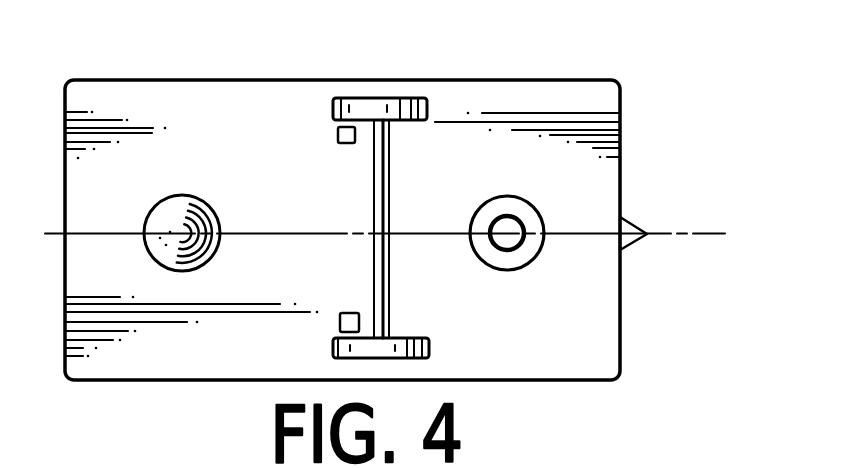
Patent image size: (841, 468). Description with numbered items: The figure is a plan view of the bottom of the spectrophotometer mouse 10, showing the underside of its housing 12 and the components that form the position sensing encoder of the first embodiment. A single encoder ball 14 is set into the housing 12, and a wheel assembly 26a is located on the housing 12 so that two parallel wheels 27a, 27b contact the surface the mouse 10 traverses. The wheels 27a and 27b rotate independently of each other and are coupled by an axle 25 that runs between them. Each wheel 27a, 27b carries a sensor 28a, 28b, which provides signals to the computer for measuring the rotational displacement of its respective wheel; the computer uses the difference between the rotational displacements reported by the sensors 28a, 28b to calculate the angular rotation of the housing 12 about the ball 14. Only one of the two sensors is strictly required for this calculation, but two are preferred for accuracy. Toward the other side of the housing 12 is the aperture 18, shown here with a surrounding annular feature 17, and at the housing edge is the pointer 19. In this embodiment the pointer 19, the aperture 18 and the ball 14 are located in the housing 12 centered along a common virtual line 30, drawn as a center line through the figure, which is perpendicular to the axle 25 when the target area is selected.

The spectrophotometer mouse 10 is at (401, 70).
The housing 12 is at (168, 80).
The encoder ball 14 is at (163, 199).
The annular boss 17 is at (492, 198).
The aperture 18 is at (535, 201).
The pointer 19 is at (634, 222).
The axle 25 is at (385, 285).
The wheel assembly 26a is at (374, 215).
The wheel 27a is at (330, 103).
The wheel 27b is at (335, 346).
The sensor 28a is at (338, 136).
The sensor 28b is at (343, 313).
The common virtual line 30 is at (688, 237).